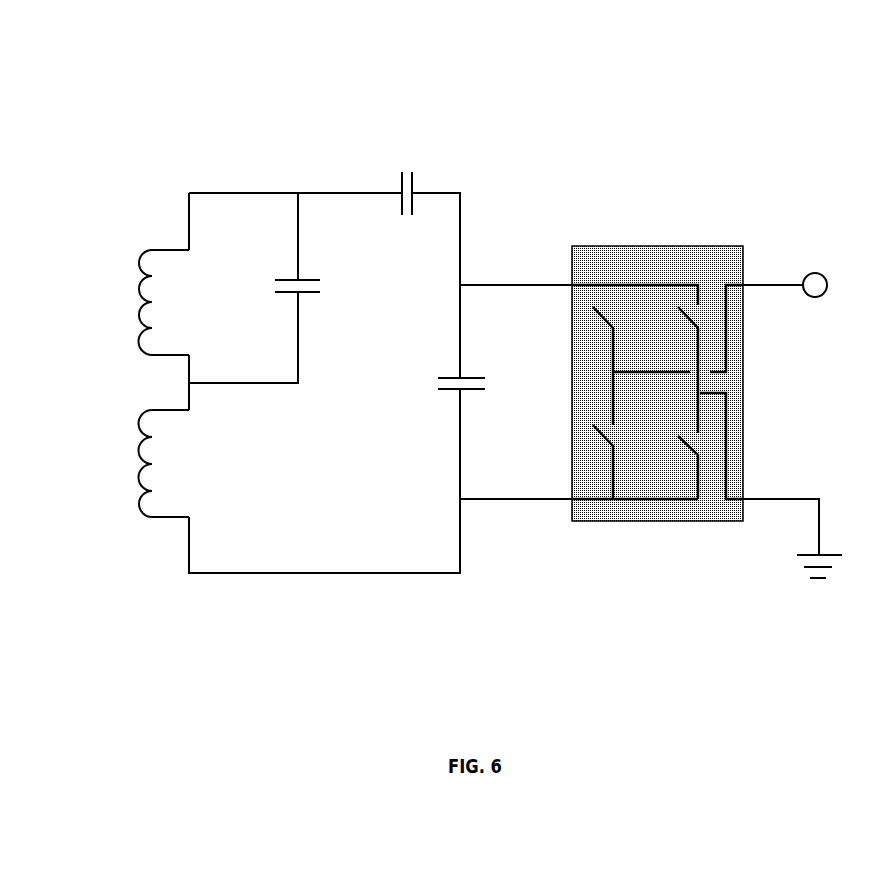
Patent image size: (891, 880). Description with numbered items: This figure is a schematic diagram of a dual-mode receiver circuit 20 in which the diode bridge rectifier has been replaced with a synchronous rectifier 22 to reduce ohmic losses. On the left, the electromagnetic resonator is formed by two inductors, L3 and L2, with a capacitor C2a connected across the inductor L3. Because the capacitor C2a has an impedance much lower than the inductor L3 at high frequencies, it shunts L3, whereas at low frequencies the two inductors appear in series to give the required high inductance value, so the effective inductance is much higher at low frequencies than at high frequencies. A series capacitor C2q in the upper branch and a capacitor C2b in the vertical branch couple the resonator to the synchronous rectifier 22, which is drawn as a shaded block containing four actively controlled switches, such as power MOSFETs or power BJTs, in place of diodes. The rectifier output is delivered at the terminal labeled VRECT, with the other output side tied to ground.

The wireless power receiver resonant circuit 20 is at (122, 108).
The synchronous rectifier 22 is at (649, 229).
The inductor L3 is at (142, 302).
The inductor L2 is at (142, 463).
The capacitor C2a is at (319, 307).
The capacitor C2b is at (436, 404).
The capacitor C2q is at (412, 173).
The rectified voltage output terminal VRECT is at (796, 268).